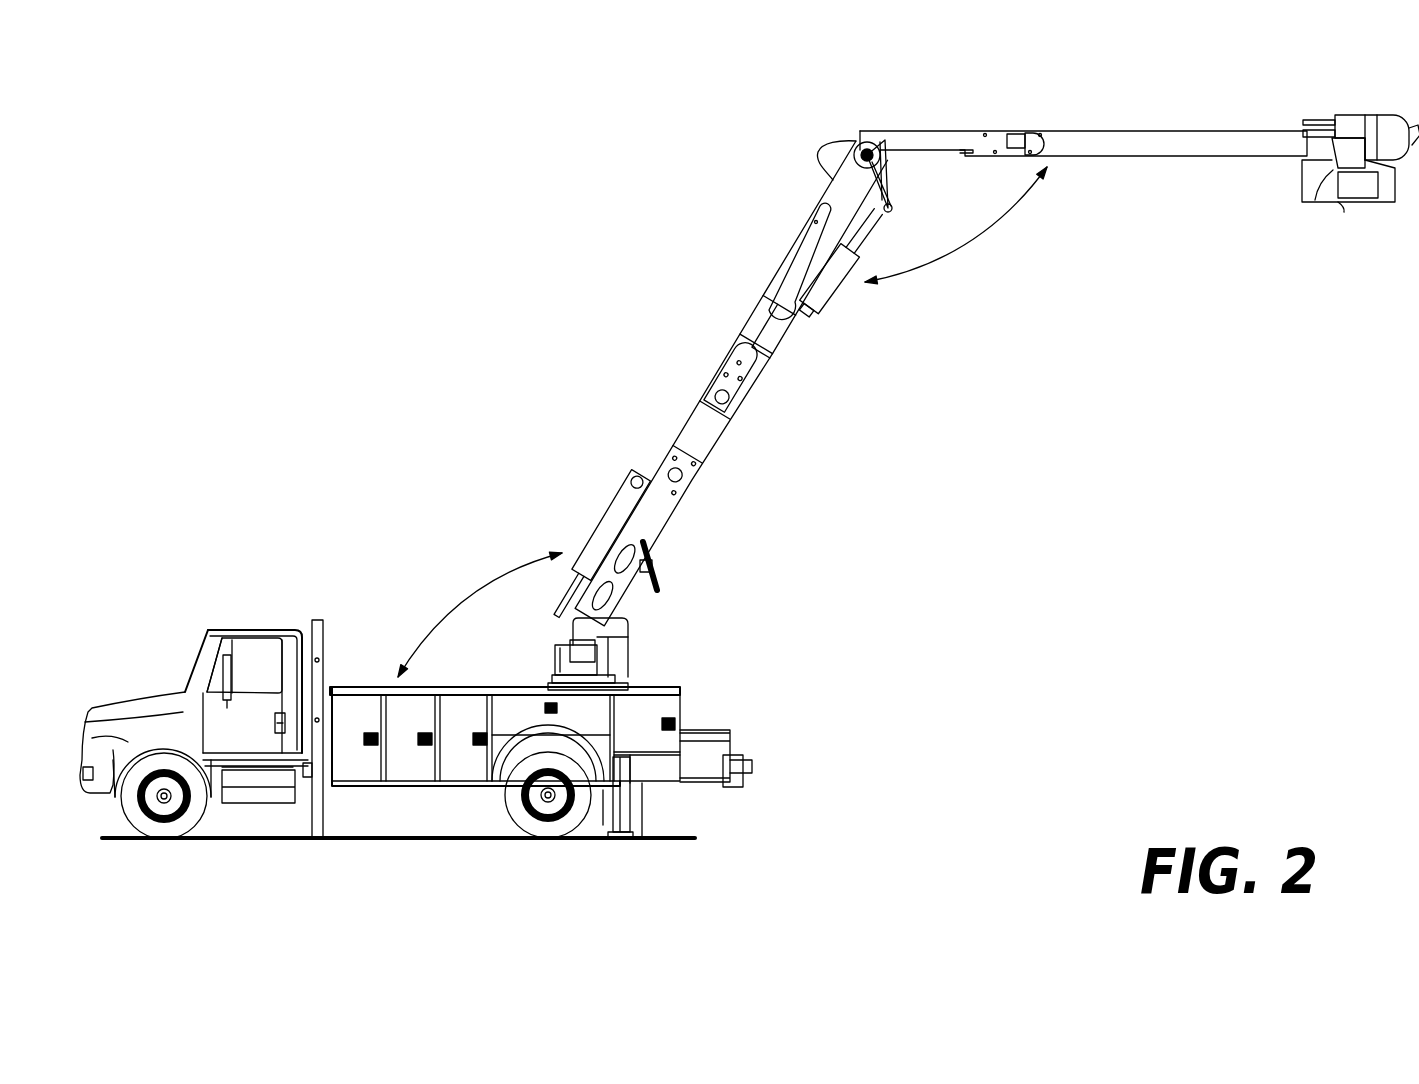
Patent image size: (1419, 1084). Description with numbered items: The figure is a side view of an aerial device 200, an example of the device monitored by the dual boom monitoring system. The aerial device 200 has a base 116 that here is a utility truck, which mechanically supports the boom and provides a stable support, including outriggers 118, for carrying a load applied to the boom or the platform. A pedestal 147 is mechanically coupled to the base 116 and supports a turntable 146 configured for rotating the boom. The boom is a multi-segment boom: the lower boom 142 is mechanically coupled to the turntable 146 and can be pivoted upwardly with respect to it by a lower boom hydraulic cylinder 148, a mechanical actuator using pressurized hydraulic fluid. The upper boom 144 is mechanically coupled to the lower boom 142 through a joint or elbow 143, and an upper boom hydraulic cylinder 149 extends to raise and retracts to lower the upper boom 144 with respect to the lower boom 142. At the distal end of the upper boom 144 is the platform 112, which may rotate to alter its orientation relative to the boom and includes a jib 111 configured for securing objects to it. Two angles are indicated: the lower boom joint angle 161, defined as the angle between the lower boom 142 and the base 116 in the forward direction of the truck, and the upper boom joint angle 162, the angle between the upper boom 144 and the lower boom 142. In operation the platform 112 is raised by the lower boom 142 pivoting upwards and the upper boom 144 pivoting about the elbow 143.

The aerial device 200 is at (368, 120).
The base 116 is at (503, 878).
The outriggers 118 is at (320, 808).
The pedestal 147 is at (628, 684).
The turntable 146 is at (617, 628).
The lower boom 142 is at (682, 494).
The lower boom hydraulic cylinder 148 is at (640, 538).
The upper boom hydraulic cylinder 149 is at (827, 293).
The elbow 143 is at (862, 148).
The upper boom 144 is at (1186, 128).
The jib 111 is at (1412, 116).
The platform 112 is at (1341, 212).
The lower boom joint angle 161 is at (468, 597).
The upper boom joint angle 162 is at (967, 244).